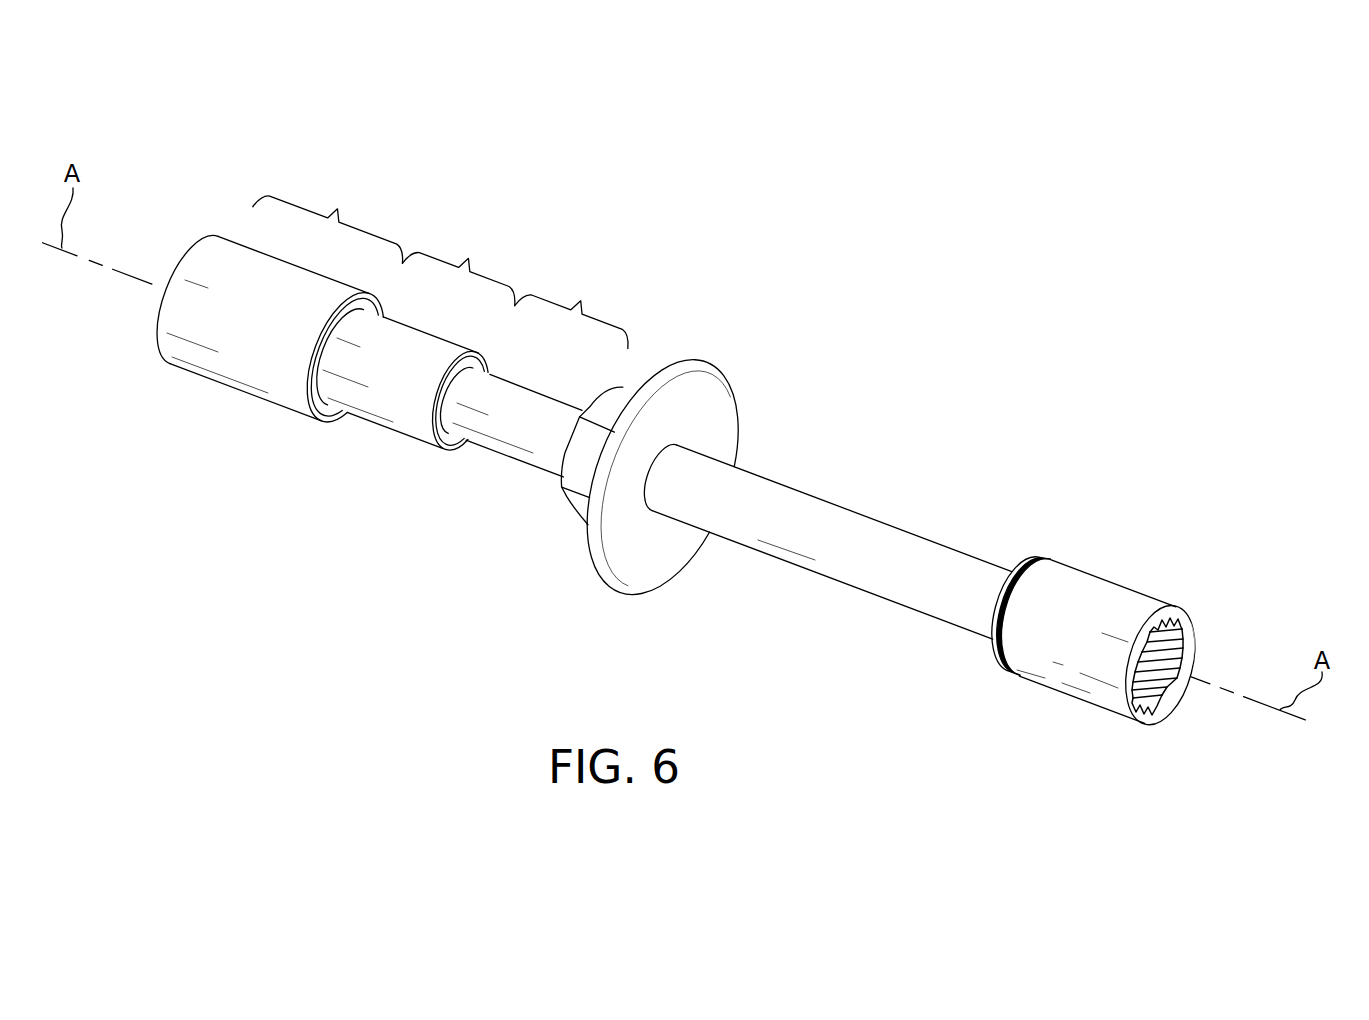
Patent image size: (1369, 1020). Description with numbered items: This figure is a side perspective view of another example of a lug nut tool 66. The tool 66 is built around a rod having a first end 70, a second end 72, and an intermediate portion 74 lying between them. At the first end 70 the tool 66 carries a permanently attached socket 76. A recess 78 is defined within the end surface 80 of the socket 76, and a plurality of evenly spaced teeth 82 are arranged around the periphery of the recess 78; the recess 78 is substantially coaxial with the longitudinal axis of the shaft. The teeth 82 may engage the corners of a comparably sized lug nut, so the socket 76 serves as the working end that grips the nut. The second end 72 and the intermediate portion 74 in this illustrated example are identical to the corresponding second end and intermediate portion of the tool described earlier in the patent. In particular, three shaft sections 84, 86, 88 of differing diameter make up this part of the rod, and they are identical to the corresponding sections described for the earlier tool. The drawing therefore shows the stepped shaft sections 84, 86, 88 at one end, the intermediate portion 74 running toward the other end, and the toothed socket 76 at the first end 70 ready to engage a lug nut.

The tool 66 is at (729, 258).
The first end 70 is at (1149, 445).
The second end 72 is at (445, 130).
The intermediate portion 74 is at (924, 337).
The socket 76 is at (1073, 668).
The recess 78 is at (1233, 641).
The end surface 80 is at (1145, 723).
The teeth 82 is at (1183, 693).
The shaft section 84 is at (582, 301).
The shaft section 86 is at (469, 259).
The shaft section 88 is at (338, 210).